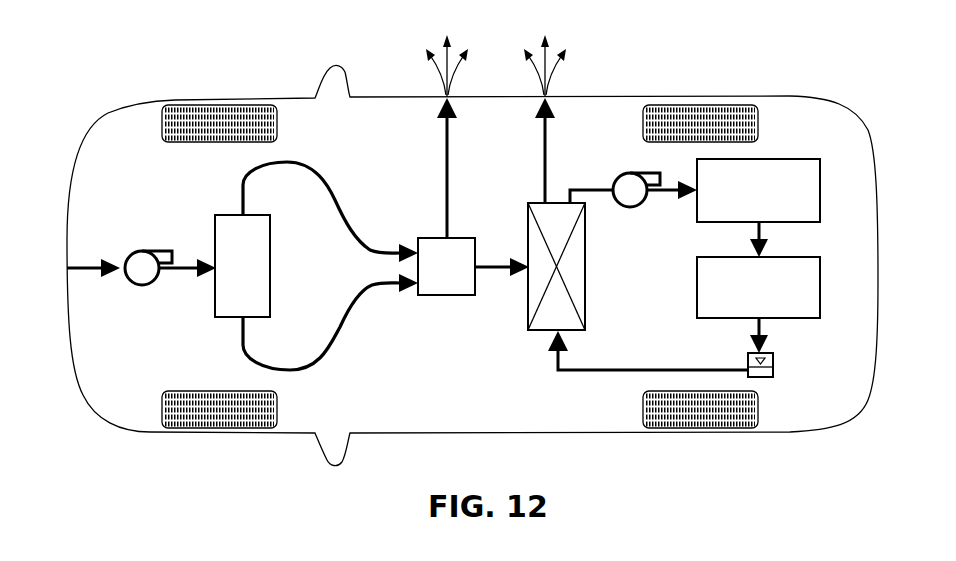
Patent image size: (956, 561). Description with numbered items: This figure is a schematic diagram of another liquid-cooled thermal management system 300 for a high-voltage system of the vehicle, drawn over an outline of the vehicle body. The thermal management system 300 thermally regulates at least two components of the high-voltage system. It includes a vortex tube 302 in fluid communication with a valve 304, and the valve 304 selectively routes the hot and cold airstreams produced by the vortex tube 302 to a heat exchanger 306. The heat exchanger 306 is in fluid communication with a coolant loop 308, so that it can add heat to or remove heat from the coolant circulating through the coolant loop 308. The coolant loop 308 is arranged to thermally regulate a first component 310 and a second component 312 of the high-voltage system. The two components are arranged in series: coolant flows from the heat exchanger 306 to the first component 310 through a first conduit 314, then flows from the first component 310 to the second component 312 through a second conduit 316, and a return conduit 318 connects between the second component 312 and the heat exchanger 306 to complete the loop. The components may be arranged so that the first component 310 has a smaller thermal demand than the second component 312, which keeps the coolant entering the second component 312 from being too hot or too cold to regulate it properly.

The thermal management system 300 is at (212, 188).
The vortex tube 302 is at (215, 240).
The valve 304 is at (430, 238).
The heat exchanger 306 is at (540, 202).
The coolant loop 308 is at (800, 370).
The first component 310 is at (775, 159).
The second component 312 is at (780, 319).
The first conduit 314 is at (580, 190).
The second conduit 316 is at (770, 231).
The return conduit 318 is at (635, 370).